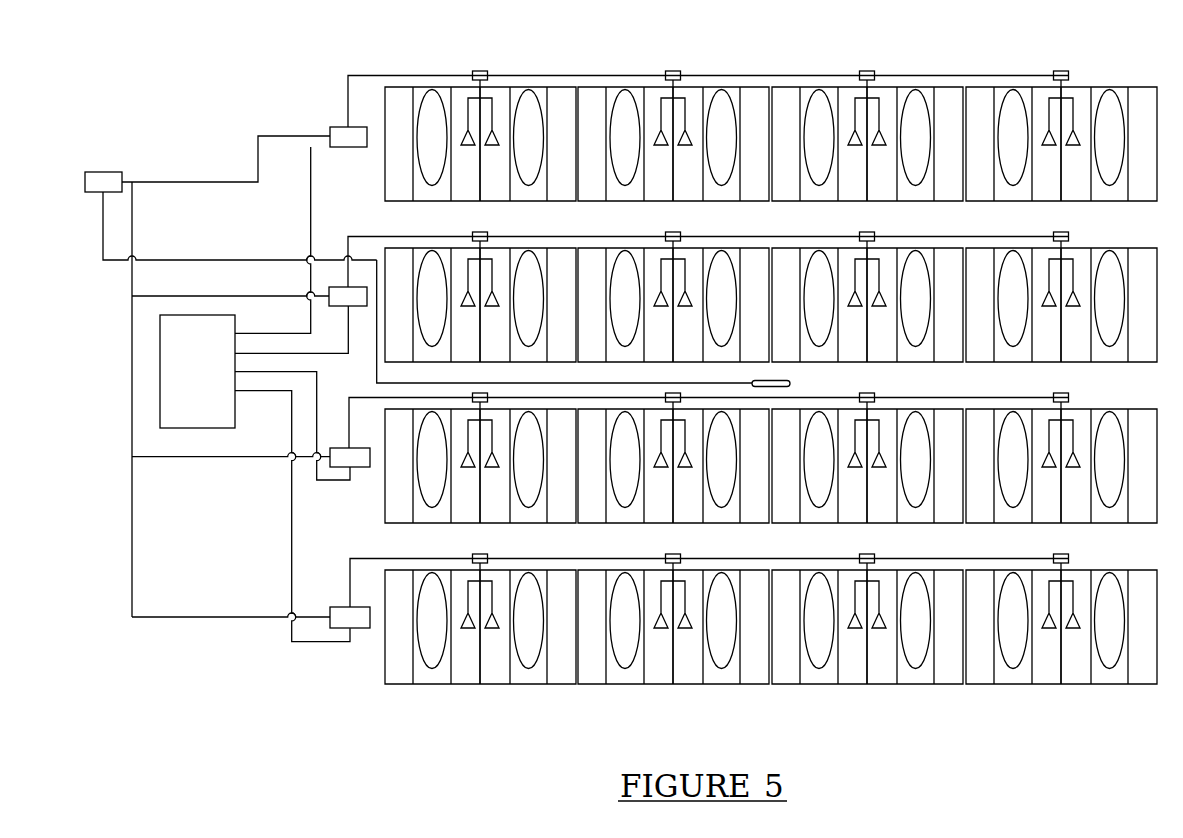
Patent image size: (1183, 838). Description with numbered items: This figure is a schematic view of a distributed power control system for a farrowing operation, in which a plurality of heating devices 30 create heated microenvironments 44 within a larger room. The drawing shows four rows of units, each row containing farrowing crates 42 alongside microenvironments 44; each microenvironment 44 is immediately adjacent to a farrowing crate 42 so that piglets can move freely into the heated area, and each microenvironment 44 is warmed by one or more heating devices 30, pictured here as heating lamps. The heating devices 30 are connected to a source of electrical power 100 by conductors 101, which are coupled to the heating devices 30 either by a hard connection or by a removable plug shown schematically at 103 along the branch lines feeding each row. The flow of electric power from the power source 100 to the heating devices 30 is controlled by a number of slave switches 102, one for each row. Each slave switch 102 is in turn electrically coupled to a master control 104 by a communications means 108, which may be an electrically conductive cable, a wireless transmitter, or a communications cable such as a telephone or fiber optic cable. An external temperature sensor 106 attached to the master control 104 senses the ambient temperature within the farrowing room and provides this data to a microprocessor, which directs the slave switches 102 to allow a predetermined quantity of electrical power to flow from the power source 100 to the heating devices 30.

The heating device 30 is at (658, 140).
The farrowing crate 42 is at (433, 678).
The microenvironment 44 is at (463, 571).
The source of electrical power 100 is at (163, 368).
The conductor 101 is at (268, 352).
The slave switch 102 is at (330, 130).
The removable plug 103 is at (665, 72).
The master control 104 is at (105, 171).
The external temperature sensor 106 is at (790, 383).
The communications means 108 is at (148, 181).